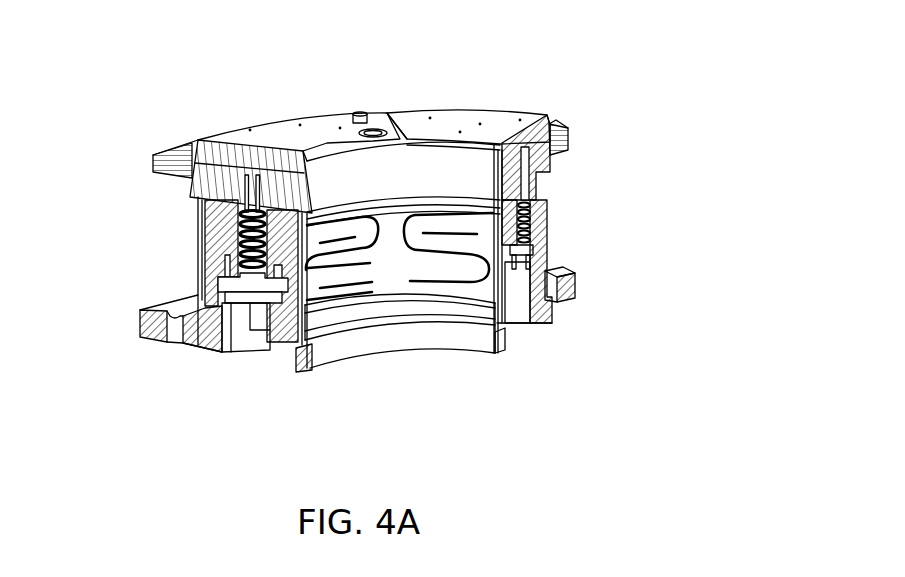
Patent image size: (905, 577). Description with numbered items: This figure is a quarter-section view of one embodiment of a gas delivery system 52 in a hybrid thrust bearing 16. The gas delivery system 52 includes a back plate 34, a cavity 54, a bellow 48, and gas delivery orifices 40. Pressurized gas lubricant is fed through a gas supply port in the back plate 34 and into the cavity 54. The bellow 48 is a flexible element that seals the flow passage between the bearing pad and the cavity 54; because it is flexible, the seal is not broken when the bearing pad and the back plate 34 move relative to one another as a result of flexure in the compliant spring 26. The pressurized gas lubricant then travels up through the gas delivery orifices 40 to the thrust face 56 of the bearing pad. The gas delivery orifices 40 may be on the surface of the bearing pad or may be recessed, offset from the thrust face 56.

The hybrid thrust bearing 16 is at (493, 44).
The gas delivery orifices 40 is at (261, 108).
The thrust face 56 is at (305, 110).
The bellow 48 is at (198, 261).
The gas delivery system 52 is at (158, 352).
The back plate 34 is at (192, 348).
The cavity 54 is at (233, 330).
The compliant spring 26 is at (438, 262).